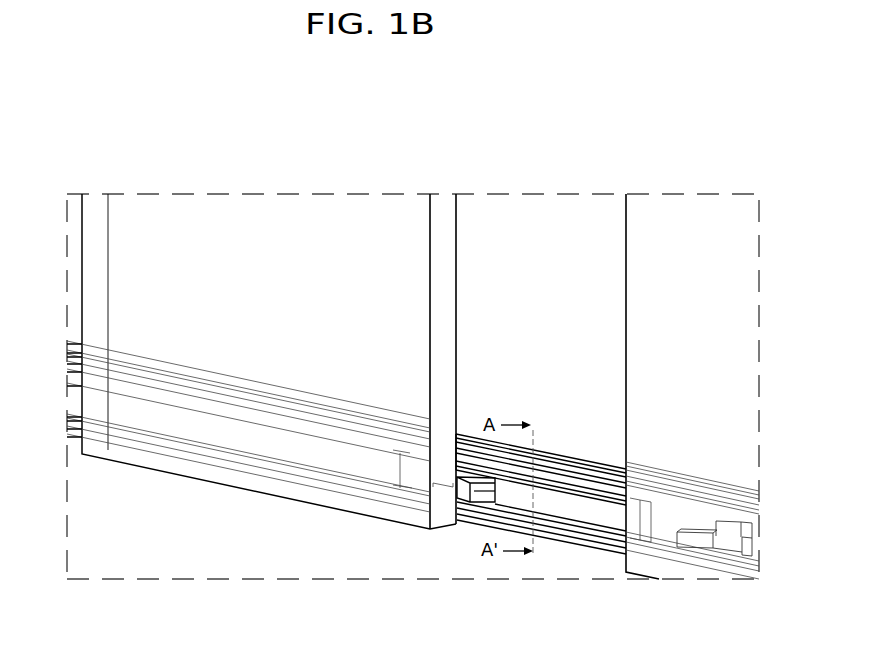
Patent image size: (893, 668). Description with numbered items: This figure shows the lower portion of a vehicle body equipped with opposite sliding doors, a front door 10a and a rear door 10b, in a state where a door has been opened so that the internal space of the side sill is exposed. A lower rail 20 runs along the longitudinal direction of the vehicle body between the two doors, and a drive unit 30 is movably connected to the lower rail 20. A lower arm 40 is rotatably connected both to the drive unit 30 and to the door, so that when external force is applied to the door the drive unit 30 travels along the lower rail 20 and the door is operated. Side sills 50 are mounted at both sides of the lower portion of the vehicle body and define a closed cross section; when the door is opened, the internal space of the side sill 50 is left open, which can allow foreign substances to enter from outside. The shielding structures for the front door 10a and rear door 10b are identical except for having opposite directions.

The front door 10a is at (271, 220).
The rear door 10b is at (689, 231).
The lower rail 20 is at (607, 513).
The drive unit 30 is at (495, 491).
The lower arm 40 is at (457, 500).
The side sill 50 is at (561, 460).